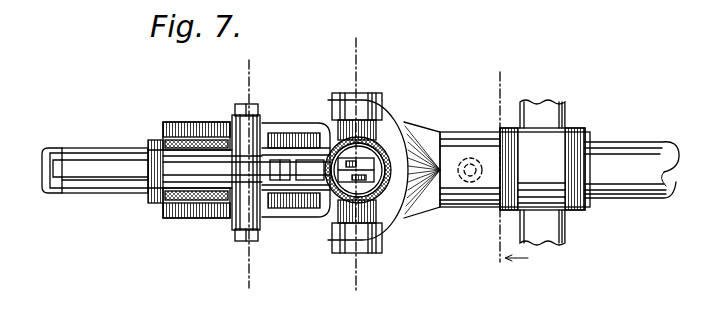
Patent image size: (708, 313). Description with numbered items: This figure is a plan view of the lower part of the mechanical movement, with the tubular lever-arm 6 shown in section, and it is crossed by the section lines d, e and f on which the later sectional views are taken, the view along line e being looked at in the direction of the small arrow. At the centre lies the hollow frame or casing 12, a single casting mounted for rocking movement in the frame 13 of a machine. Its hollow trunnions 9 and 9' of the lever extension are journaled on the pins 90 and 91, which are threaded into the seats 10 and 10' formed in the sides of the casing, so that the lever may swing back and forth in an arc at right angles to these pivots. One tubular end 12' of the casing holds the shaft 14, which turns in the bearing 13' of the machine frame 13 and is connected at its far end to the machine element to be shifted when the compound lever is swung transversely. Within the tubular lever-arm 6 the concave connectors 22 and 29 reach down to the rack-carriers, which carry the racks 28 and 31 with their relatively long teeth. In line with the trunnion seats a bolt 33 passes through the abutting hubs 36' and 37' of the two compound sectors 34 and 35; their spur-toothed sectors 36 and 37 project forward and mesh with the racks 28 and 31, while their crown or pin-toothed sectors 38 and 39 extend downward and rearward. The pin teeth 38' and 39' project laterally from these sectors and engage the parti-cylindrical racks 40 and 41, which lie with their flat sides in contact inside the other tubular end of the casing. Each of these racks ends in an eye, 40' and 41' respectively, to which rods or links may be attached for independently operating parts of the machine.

The tubular lever-arm 6 is at (310, 218).
The hollow trunnion 9 is at (370, 202).
The hollow trunnion 9' is at (375, 145).
The seat 10 is at (346, 241).
The seat 10' is at (379, 103).
The hollow frame or casing 12 is at (469, 217).
The tubular end 12' is at (515, 161).
The frame of a machine 13 is at (560, 184).
The bearing 13' is at (542, 169).
The shaft 14 is at (612, 148).
The connector 22 is at (352, 254).
The rack 28 is at (398, 128).
The connector 29 is at (372, 93).
The rack 31 is at (408, 212).
The bolt 33 is at (250, 104).
The compound spur-gear and pin-gear sector 34 is at (276, 206).
The compound spur-gear and pin-gear sector 35 is at (312, 134).
The spur-toothed sector 36 is at (296, 221).
The hub 36' is at (234, 257).
The spur-toothed sector 37 is at (272, 162).
The hub 37' is at (234, 153).
The pin-toothed sector 38 is at (196, 219).
The pin teeth 38' is at (186, 214).
The pin-toothed sector 39 is at (196, 121).
The pin teeth 39' is at (171, 183).
The parti-cylindrical rack 40 is at (105, 196).
The eye 40' is at (43, 196).
The parti-cylindrical rack 41 is at (105, 158).
The eye 41' is at (46, 158).
The pin 90 is at (378, 251).
The pin 91 is at (350, 93).
The section line d d is at (249, 173).
The section line e e is at (511, 170).
The section line f f is at (355, 164).